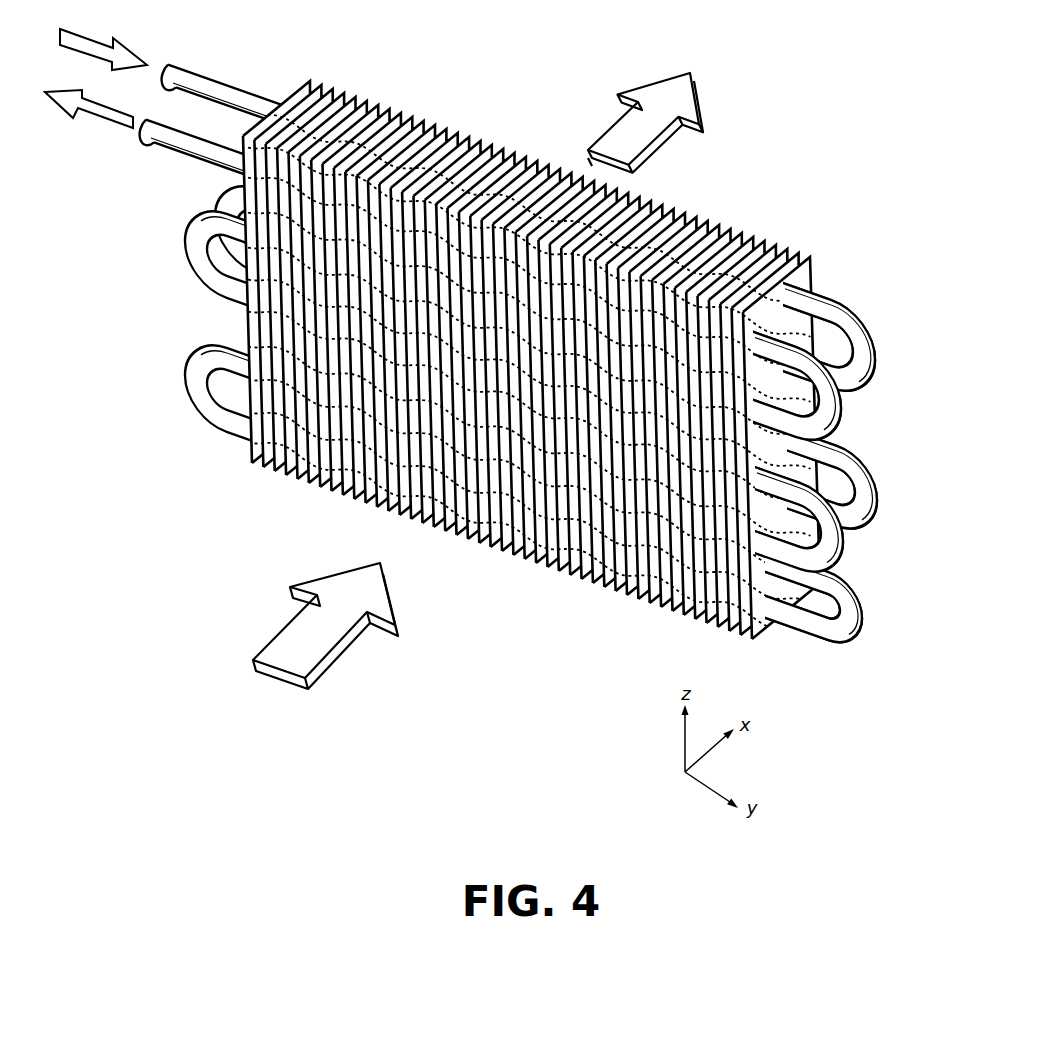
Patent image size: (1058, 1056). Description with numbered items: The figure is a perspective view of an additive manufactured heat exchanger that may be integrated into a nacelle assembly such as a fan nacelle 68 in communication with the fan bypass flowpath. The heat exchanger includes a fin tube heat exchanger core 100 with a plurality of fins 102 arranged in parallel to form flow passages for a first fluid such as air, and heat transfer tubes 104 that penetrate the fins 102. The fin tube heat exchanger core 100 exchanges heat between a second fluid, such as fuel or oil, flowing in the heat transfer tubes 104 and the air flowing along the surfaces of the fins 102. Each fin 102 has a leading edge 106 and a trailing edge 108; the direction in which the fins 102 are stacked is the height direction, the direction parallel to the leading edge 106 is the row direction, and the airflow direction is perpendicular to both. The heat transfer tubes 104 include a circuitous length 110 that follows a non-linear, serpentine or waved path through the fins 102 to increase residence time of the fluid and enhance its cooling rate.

The fan nacelle 68 is at (505, 359).
The fin tube heat exchanger core 100 is at (553, 358).
The fins 102 is at (727, 257).
The heat transfer tubes 104 is at (862, 446).
The leading edge 106 is at (640, 597).
The trailing edge 108 is at (525, 157).
The circuitous length 110 is at (524, 563).